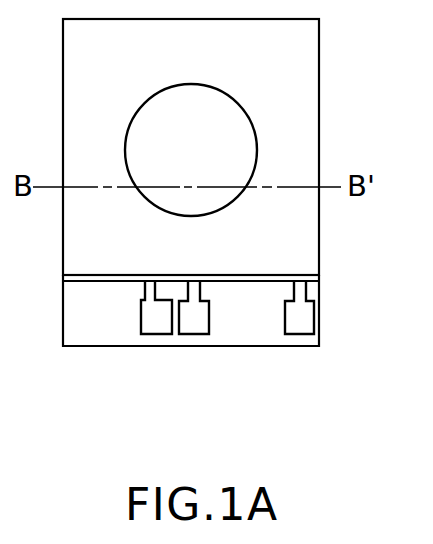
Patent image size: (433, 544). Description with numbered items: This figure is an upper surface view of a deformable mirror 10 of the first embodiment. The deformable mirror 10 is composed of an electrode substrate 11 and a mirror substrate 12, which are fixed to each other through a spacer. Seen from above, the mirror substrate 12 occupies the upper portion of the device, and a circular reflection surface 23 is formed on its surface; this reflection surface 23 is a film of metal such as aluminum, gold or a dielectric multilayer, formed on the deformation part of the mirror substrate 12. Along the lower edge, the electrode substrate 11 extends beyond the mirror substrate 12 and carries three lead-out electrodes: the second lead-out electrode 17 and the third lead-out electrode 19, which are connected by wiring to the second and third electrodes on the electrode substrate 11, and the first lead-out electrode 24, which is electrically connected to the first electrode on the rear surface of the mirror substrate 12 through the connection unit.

The deformable mirror 10 is at (167, 436).
The electrode substrate 11 is at (321, 297).
The mirror substrate 12 is at (319, 137).
The second lead-out electrode 17 is at (152, 334).
The third lead-out electrode 19 is at (198, 334).
The reflection surface 23 is at (233, 123).
The first lead-out electrode 24 is at (295, 334).